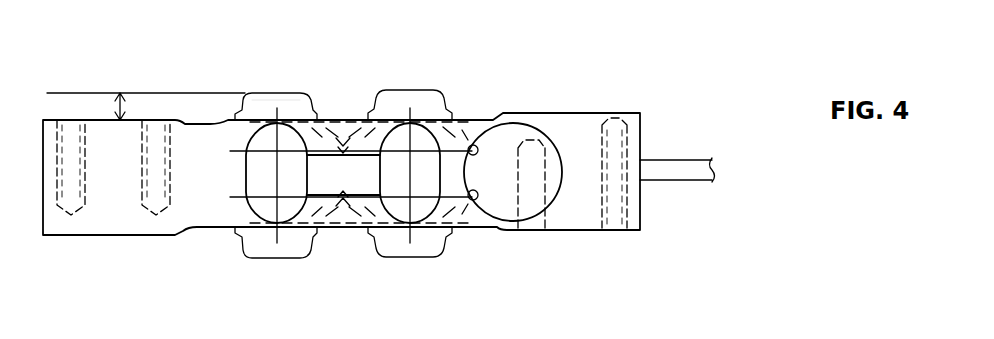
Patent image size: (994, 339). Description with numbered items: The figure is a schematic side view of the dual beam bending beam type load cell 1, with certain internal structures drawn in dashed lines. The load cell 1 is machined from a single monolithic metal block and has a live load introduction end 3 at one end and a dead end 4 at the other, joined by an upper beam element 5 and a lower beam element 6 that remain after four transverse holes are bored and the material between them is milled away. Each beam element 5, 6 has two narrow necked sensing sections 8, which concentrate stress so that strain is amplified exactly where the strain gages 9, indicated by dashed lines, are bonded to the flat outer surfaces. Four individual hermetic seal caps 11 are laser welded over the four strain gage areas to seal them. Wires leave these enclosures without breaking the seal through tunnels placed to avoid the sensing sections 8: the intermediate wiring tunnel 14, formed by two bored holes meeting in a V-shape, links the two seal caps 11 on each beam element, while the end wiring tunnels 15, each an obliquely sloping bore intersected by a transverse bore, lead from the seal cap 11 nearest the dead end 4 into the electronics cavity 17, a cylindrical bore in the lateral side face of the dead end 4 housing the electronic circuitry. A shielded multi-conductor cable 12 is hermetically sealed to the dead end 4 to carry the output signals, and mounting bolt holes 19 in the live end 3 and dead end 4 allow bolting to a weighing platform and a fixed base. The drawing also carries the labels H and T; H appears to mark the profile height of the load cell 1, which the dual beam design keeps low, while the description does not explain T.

The load cell 1 is at (184, 52).
The live load introduction end 3 is at (117, 228).
The dead end 4 is at (575, 117).
The upper beam element 5 is at (337, 118).
The lower beam element 6 is at (340, 232).
The sensing sections 8 is at (247, 120).
The strain gages 9 is at (416, 117).
The hermetic seal caps 11 is at (278, 100).
The shielded multi-conductor cable 12 is at (672, 160).
The intermediate wiring tunnel 14 is at (355, 123).
The end wiring tunnels 15 is at (455, 135).
The electronics cavity 17 is at (498, 185).
The mounting bolt holes 19 is at (622, 230).
The height dimension H is at (112, 110).
The thickness dimension T is at (262, 262).